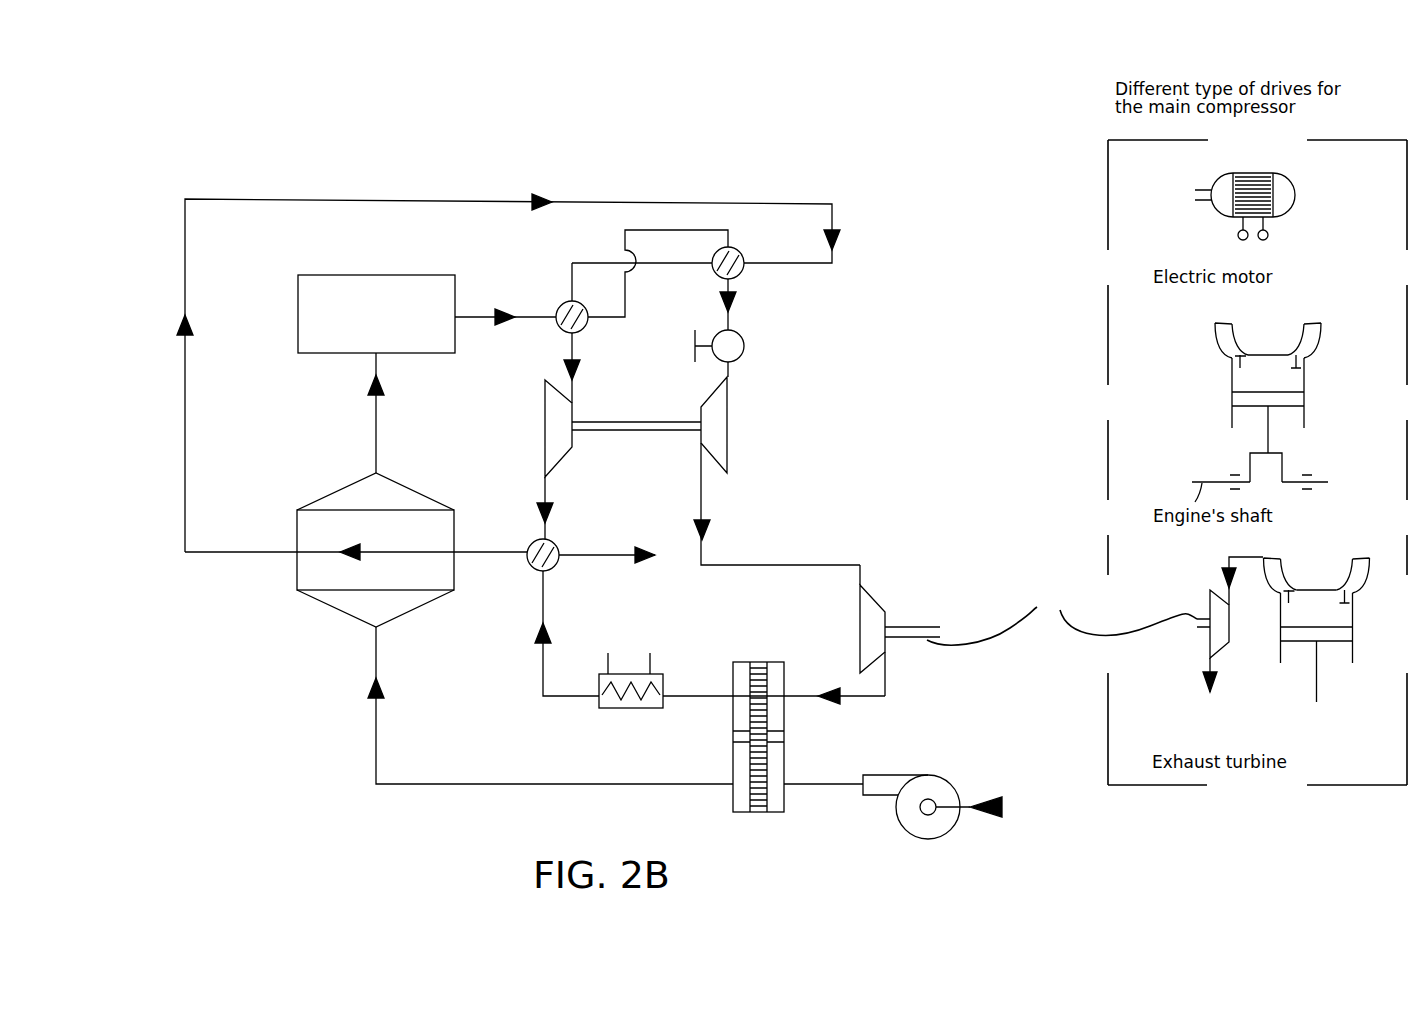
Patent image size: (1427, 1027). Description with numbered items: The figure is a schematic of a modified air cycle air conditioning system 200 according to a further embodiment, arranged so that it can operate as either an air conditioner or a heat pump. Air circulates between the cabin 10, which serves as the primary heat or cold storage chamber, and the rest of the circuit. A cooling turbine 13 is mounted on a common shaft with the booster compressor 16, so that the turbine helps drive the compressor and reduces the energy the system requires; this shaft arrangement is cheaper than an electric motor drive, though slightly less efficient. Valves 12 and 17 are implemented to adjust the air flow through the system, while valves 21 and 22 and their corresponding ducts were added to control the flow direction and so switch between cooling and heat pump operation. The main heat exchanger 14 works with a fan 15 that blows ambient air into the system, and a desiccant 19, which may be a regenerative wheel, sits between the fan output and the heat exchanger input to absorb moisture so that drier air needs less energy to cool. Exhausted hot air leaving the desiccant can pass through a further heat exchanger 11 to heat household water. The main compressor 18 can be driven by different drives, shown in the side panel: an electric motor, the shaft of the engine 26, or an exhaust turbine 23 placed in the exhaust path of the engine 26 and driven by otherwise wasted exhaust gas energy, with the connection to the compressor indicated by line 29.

The air cycle air conditioning system 200 is at (249, 171).
The cabin 10 is at (428, 313).
The heat exchanger 11 is at (657, 683).
The valve 12 is at (568, 315).
The cooling turbine 13 is at (558, 437).
The main heat exchanger 14 is at (373, 500).
The fan 15 is at (890, 785).
The booster compressor 16 is at (720, 437).
The valve 17 is at (735, 343).
The main compressor 18 is at (870, 620).
The desiccant 19 is at (740, 682).
The valve 21 is at (730, 267).
The valve 22 is at (538, 573).
The exhaust turbine 23 is at (1222, 637).
The engine 26 is at (1268, 360).
The exhaust line 29 is at (1062, 611).